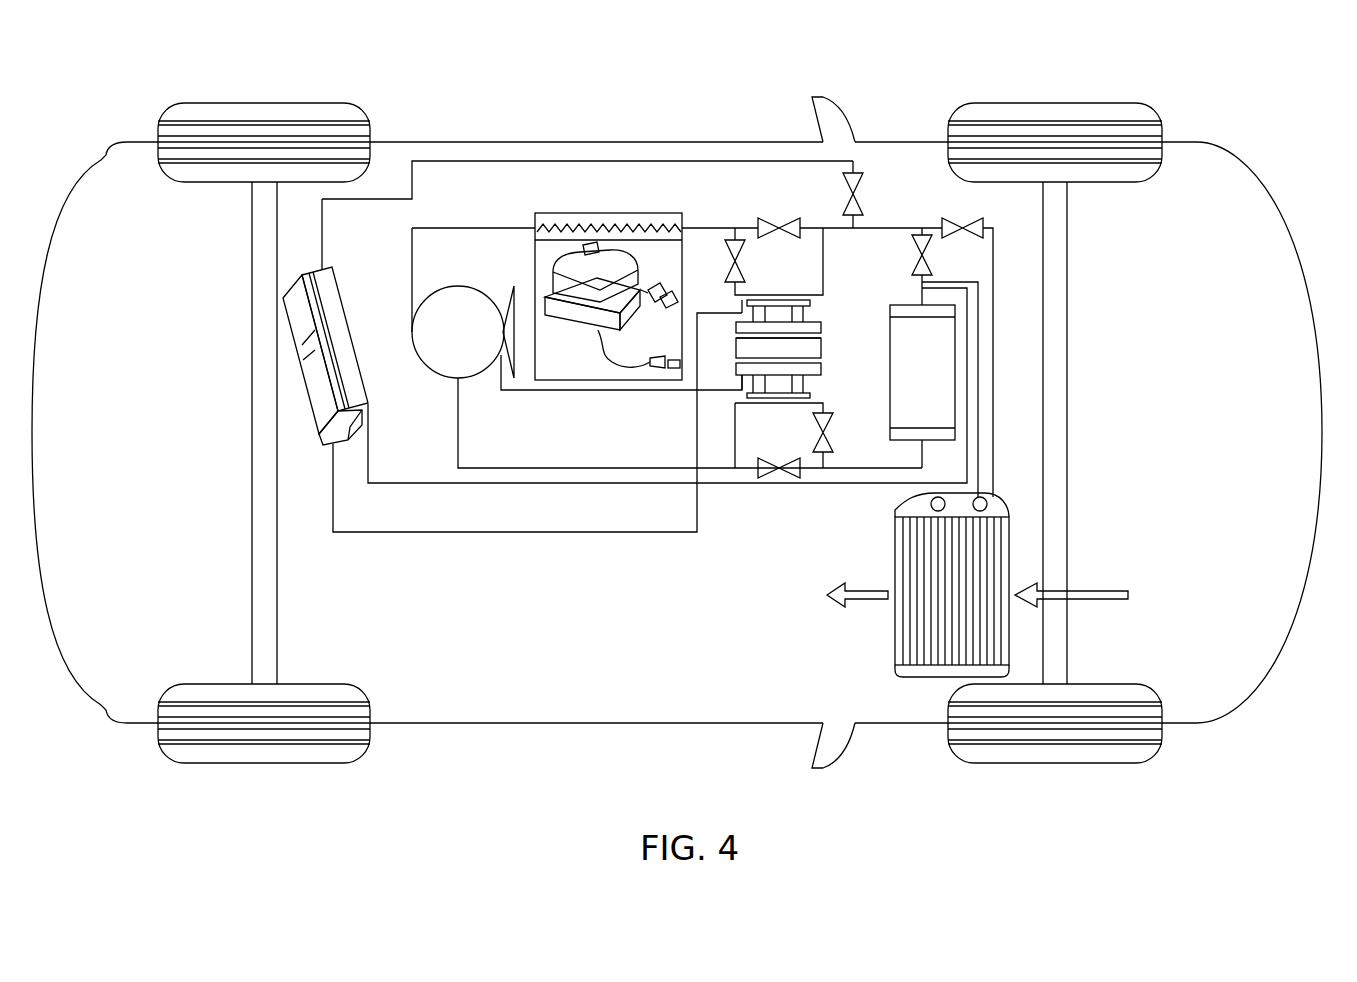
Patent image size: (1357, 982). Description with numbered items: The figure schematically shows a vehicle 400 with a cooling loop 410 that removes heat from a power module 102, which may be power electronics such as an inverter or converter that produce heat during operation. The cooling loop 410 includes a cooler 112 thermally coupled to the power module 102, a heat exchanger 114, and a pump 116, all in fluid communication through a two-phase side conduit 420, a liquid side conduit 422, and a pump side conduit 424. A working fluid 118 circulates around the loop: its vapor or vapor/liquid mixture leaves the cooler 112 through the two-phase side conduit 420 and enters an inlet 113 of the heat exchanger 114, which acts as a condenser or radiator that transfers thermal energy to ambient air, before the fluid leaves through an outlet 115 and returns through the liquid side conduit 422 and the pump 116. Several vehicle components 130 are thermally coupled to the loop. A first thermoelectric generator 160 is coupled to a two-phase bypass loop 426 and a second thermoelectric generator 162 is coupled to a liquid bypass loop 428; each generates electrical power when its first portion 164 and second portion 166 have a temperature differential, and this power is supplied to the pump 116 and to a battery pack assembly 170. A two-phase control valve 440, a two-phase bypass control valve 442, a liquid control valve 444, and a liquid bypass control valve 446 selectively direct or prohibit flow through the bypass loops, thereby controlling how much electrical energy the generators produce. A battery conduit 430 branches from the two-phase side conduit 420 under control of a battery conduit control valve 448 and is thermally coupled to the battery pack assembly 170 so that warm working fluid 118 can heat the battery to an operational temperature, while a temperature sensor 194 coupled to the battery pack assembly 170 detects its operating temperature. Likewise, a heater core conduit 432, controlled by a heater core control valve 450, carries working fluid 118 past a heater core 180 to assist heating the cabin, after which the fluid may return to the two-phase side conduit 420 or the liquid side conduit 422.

The vehicle 400 is at (1240, 112).
The cooling loop 410 is at (618, 150).
The two-phase side conduit 420 is at (892, 226).
The liquid side conduit 422 is at (598, 468).
The pump side conduit 424 is at (472, 228).
The two-phase bypass loop 426 is at (828, 250).
The liquid bypass loop 428 is at (735, 462).
The battery conduit 430 is at (470, 161).
The heater core conduit 432 is at (994, 415).
The two-phase control valve 440 is at (770, 222).
The two-phase bypass control valve 442 is at (744, 258).
The liquid control valve 444 is at (778, 480).
The liquid bypass control valve 446 is at (815, 447).
The battery conduit control valve 448 is at (843, 200).
The heater core control valve 450 is at (965, 228).
The power module 102 is at (572, 313).
The cooler 112 is at (598, 213).
The inlet 113 is at (930, 295).
The heat exchanger 114 is at (938, 386).
The outlet 115 is at (915, 443).
The pump 116 is at (467, 285).
The working fluid 118 is at (556, 232).
The vehicle component 130 is at (718, 302).
The first thermoelectric generator 160 is at (838, 310).
The second thermoelectric generator 162 is at (832, 387).
The first portion 164 is at (848, 284).
The second portion 166 is at (822, 330).
The battery pack assembly 170 is at (285, 272).
The heater core 180 is at (895, 625).
The temperature sensor 194 is at (307, 353).